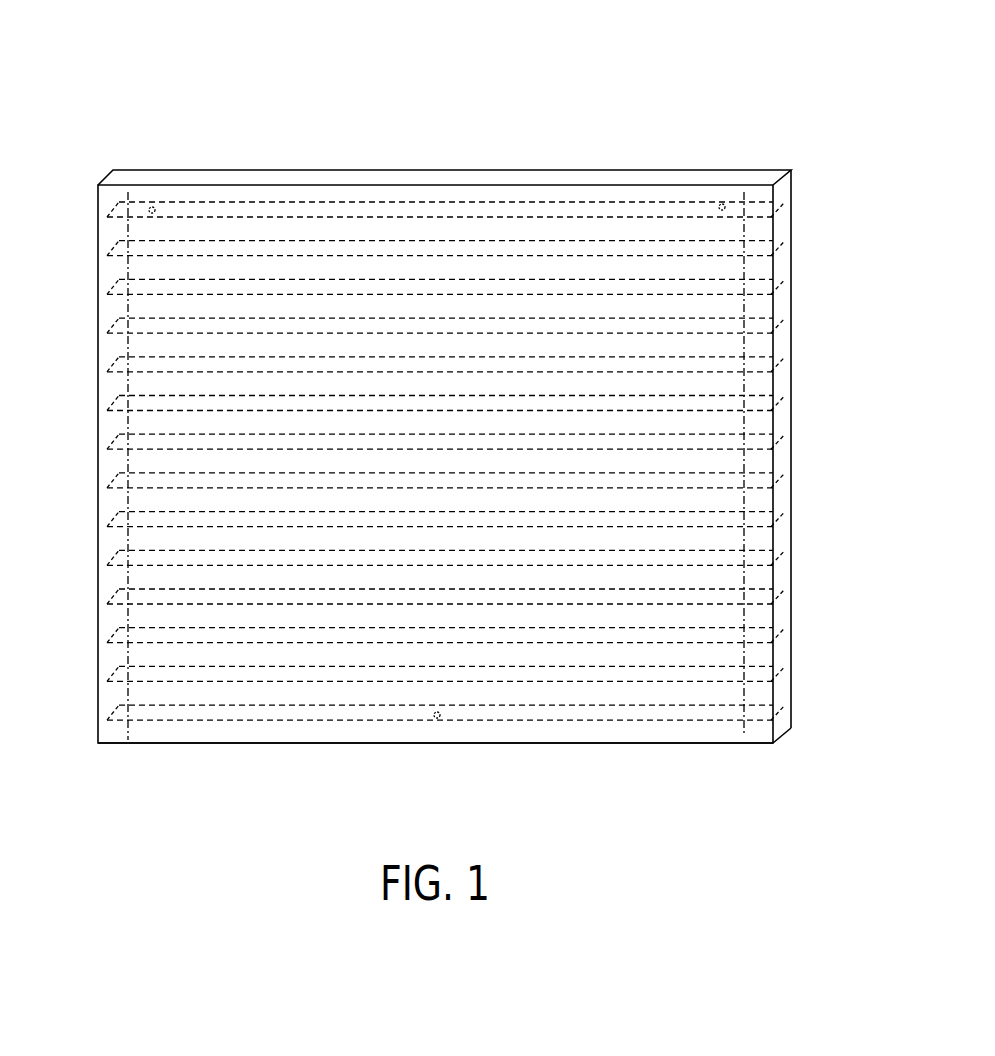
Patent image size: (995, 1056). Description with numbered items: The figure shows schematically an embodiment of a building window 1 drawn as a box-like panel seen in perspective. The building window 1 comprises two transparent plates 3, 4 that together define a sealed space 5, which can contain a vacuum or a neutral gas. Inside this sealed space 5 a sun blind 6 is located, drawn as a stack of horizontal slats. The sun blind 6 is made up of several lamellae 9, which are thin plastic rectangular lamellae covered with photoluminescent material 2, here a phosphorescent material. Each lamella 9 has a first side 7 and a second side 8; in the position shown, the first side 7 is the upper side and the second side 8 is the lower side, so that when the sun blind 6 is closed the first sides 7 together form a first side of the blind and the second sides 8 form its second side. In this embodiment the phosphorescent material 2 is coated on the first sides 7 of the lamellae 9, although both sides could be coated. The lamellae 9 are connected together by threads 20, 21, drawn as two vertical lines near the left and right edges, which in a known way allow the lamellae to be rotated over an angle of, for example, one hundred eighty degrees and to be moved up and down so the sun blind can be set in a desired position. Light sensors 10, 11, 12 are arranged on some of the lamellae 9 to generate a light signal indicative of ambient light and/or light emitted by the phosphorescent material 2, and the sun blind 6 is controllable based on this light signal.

The building window 1 is at (773, 98).
The photoluminescent material 2 is at (630, 208).
The transparent plate 3 is at (785, 732).
The transparent plate 4 is at (793, 680).
The sealed space 5 is at (783, 530).
The sun blind 6 is at (240, 693).
The first side 7 is at (482, 207).
The second side 8 is at (140, 218).
The lamella 9 is at (605, 713).
The light sensor 10 is at (722, 204).
The light sensor 11 is at (152, 207).
The light sensor 12 is at (437, 718).
The thread 20 is at (128, 418).
The thread 21 is at (745, 420).